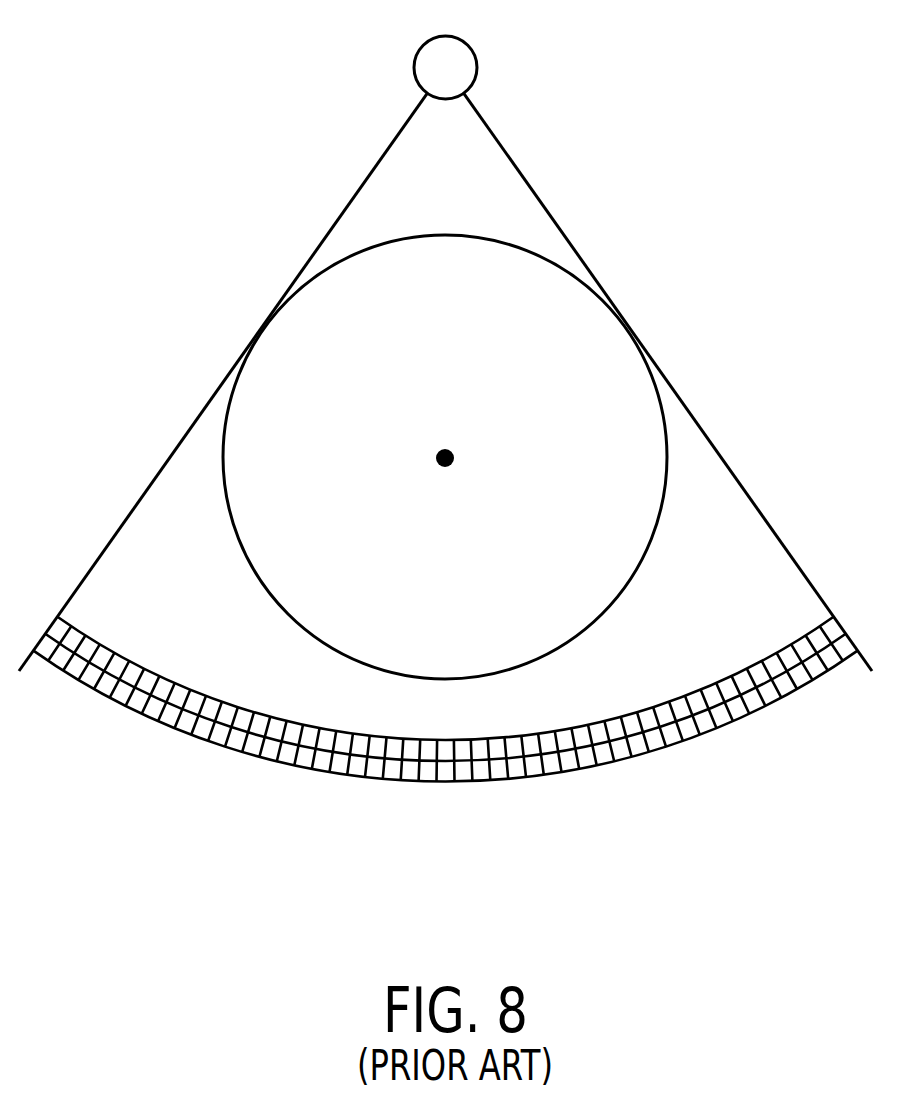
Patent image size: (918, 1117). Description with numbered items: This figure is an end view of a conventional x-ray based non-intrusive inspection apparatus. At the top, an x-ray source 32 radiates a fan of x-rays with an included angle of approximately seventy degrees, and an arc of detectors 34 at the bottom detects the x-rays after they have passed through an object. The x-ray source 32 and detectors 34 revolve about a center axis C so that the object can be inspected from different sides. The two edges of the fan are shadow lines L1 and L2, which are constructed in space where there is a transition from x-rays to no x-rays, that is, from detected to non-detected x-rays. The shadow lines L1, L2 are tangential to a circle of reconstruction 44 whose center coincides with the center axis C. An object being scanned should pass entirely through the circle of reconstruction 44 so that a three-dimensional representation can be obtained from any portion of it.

The x-ray source 32 is at (478, 72).
The detectors 34 is at (517, 773).
The circle of reconstruction 44 is at (221, 472).
The shadow line L1 is at (690, 413).
The shadow line L2 is at (201, 413).
The center axis C is at (428, 457).